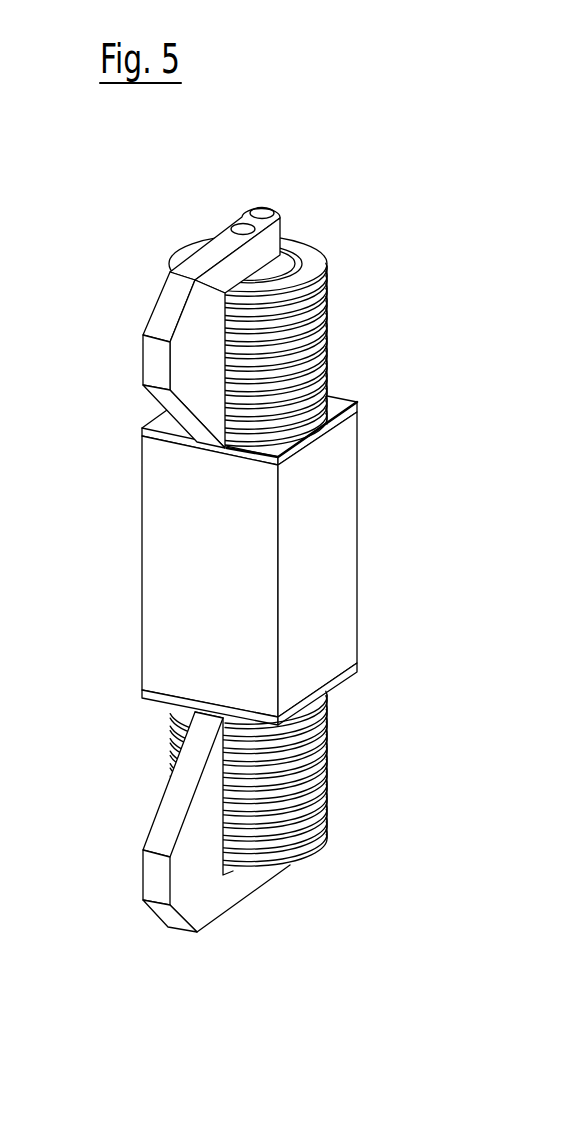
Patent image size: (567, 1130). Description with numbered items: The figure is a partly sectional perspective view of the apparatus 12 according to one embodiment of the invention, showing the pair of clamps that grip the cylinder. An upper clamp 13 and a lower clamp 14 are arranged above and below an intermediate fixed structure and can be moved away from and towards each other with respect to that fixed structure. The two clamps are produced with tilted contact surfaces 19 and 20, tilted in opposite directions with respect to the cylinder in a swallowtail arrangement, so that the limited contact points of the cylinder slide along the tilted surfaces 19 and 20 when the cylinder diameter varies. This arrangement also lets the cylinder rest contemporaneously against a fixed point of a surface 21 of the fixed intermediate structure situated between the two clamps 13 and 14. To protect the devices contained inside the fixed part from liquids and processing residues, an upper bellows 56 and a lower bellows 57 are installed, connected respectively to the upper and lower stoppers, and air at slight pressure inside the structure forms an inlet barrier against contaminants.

The clamp assembly 12 is at (216, 530).
The upper clamp 13 is at (164, 376).
The lower clamp 14 is at (152, 867).
The tilted contact surface 19 is at (182, 414).
The tilted contact surface 20 is at (172, 818).
The surface 21 is at (190, 622).
The upper bellows 56 is at (310, 328).
The lower bellows 57 is at (293, 803).